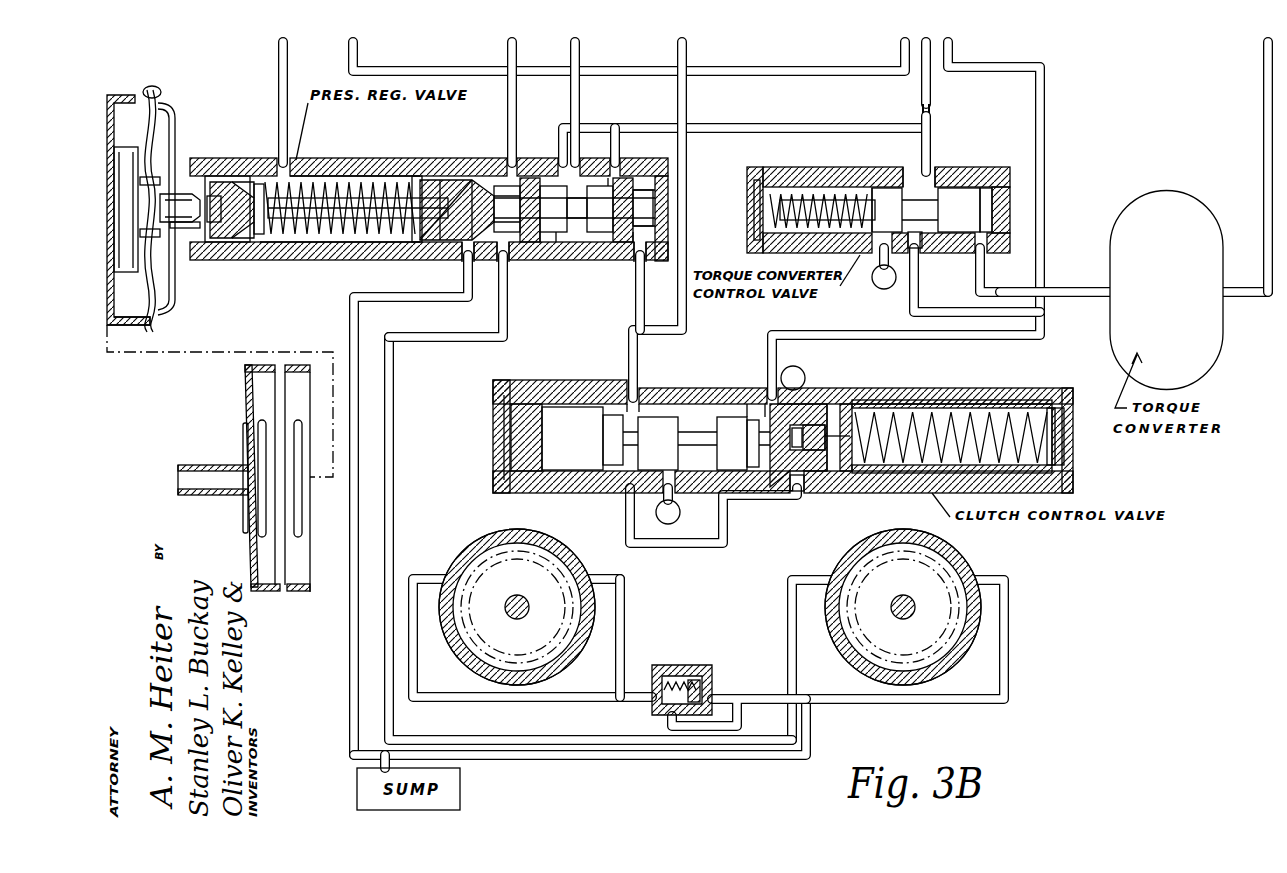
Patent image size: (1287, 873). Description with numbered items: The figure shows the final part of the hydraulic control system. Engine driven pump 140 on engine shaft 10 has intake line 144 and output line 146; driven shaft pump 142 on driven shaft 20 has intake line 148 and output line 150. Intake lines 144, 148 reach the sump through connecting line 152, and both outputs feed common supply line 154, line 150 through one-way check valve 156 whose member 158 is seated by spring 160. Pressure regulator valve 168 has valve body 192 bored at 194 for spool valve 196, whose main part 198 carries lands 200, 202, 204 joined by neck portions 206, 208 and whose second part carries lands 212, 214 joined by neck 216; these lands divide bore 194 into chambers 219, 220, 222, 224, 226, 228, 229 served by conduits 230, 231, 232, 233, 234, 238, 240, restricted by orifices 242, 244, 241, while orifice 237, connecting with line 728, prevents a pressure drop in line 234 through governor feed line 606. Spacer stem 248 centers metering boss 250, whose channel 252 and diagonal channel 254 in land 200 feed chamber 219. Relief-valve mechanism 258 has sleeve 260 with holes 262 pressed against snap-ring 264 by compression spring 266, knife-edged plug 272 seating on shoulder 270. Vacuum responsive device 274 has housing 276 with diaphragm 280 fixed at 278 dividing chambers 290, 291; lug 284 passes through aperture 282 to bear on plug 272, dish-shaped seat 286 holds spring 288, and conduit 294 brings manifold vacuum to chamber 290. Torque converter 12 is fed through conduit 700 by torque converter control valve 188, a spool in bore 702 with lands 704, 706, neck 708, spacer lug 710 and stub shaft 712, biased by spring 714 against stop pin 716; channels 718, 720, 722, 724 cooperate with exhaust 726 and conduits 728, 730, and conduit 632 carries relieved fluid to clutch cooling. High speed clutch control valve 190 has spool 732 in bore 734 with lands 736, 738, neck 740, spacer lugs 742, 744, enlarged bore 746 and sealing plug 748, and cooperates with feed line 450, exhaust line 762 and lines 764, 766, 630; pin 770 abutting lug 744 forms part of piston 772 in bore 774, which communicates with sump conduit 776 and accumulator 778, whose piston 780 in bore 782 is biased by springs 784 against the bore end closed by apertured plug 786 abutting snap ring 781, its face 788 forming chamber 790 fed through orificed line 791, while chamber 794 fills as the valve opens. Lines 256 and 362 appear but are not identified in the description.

The engine shaft 10 is at (520, 597).
The torque converter 12 is at (1140, 205).
The driven shaft 20 is at (908, 597).
The drive shaft pump 140 is at (472, 538).
The driven shaft pump 142 is at (987, 566).
The fluid intake line 144 is at (430, 577).
The fluid output line 146 is at (625, 618).
The intake fluid line 148 is at (798, 578).
The fluid output line 150 is at (1010, 650).
The connecting line 152 is at (555, 760).
The common supply line 154 is at (397, 490).
The one-way check valve 156 is at (704, 659).
The valve member 158 is at (718, 698).
The spring 160 is at (662, 668).
The pressure regulator valve 168 is at (298, 158).
The torque converter control valve 188 is at (783, 169).
The high speed clutch control valve 190 is at (572, 373).
The valve body 192 is at (255, 158).
The bore 194 is at (345, 158).
The two-piece reciprocating spool type valve 196 is at (445, 180).
The main pressure regulating part 198 is at (480, 180).
The land 200 is at (496, 186).
The land 202 is at (510, 186).
The land 204 is at (562, 243).
The reduced neck portion 206 is at (497, 262).
The reduced neck portion 208 is at (530, 178).
The land 212 is at (615, 240).
The land 214 is at (648, 200).
The reduced neck portion 216 is at (630, 243).
The chamber 219 is at (305, 242).
The chamber 220 is at (462, 268).
The chamber 222 is at (540, 243).
The chamber 224 is at (548, 232).
The chamber 226 is at (598, 243).
The chamber 228 is at (657, 178).
The chamber 229 is at (648, 245).
The fluid pressure conduit 230 is at (290, 60).
The fluid pressure conduit 231 is at (349, 325).
The fluid pressure conduit 232 is at (498, 305).
The fluid pressure conduit 233 is at (505, 60).
The fluid pressure conduit 234 is at (560, 125).
The orifice 237 is at (933, 112).
The fluid pressure conduit 238 is at (618, 110).
The fluid pressure conduit 240 is at (645, 305).
The orifice 241 is at (650, 258).
The orifice 242 is at (578, 186).
The orifice 244 is at (616, 186).
The spacer stem 248 is at (338, 198).
The fluid metering boss 250 is at (418, 180).
The restricted fluid channel 252 is at (400, 182).
The restrictive channel 254 is at (395, 250).
The pipe 256 is at (580, 60).
The relief-valve mechanism 258 is at (222, 165).
The slidable sleeve 260 is at (255, 242).
The fluid communication holes 262 is at (247, 238).
The snap-ring 264 is at (207, 176).
The compression spring 266 is at (325, 240).
The annular shoulder 270 is at (232, 240).
The annular knife-edged plug 272 is at (240, 182).
The engine-vacuum-spring force responsive device 274 is at (165, 95).
The housing 276 is at (125, 97).
The diaphragm fixing point 278 is at (148, 92).
The annular flexible diaphragm 280 is at (178, 118).
The aperture 282 is at (183, 228).
The lug 284 is at (183, 194).
The dish-shaped seat 286 is at (125, 147).
The spring 288 is at (126, 265).
The chamber 290 is at (120, 350).
The chamber 291 is at (165, 300).
The conduit 294 is at (192, 465).
The pipe 362 is at (358, 70).
The fluid feed line 450 is at (690, 58).
The governor feed line 606 is at (921, 90).
The line 630 is at (955, 58).
The fluid conduit 632 is at (1262, 88).
The torque converter supply conduit 700 is at (1062, 292).
The bore 702 is at (820, 200).
The land 704 is at (958, 190).
The land 706 is at (888, 190).
The reduced neck portion 708 is at (930, 240).
The spacer lug 710 is at (652, 190).
The stub shaft 712 is at (790, 192).
The spring 714 is at (752, 167).
The stop pin 716 is at (752, 195).
The channel 718 is at (872, 190).
The channel 720 is at (910, 167).
The channel 722 is at (945, 232).
The channel 724 is at (990, 185).
The exhaust conduit 726 is at (876, 268).
The conduit 728 is at (933, 140).
The conduit 730 is at (993, 275).
The spool-type reciprocating valve 732 is at (648, 400).
The bore 734 is at (685, 410).
The land 736 is at (638, 405).
The land 738 is at (750, 410).
The reduced neck portion 740 is at (702, 410).
The spacer lug 742 is at (600, 493).
The spacer lug 744 is at (762, 388).
The enlarged bore 746 is at (558, 380).
The annular fluid sealing plug 748 is at (535, 493).
The exhaust line 762 is at (670, 495).
The line 764 is at (737, 495).
The line 766 is at (656, 548).
The pin 770 is at (795, 455).
The piston 772 is at (828, 425).
The reduced diameter bore 774 is at (808, 425).
The fluid conduit 776 is at (793, 366).
The fluid pressure accumulator 778 is at (900, 381).
The accumulator piston 780 is at (938, 410).
The snap ring 781 is at (1068, 478).
The enlarged bore 782 is at (1000, 410).
The springs 784 is at (1040, 410).
The annular apertured plug 786 is at (1060, 460).
The piston face 788 is at (870, 400).
The fluid chamber 790 is at (858, 492).
The orificed line 791 is at (840, 492).
The chamber 794 is at (670, 430).